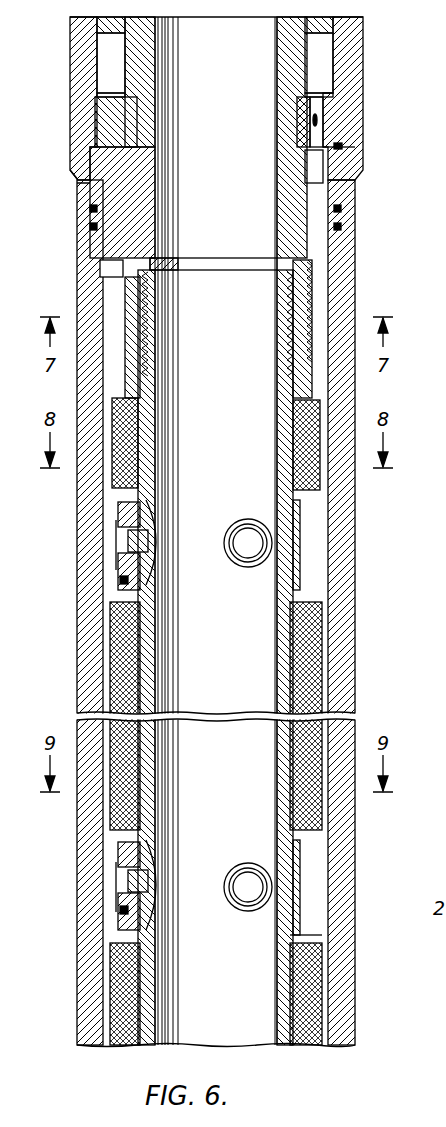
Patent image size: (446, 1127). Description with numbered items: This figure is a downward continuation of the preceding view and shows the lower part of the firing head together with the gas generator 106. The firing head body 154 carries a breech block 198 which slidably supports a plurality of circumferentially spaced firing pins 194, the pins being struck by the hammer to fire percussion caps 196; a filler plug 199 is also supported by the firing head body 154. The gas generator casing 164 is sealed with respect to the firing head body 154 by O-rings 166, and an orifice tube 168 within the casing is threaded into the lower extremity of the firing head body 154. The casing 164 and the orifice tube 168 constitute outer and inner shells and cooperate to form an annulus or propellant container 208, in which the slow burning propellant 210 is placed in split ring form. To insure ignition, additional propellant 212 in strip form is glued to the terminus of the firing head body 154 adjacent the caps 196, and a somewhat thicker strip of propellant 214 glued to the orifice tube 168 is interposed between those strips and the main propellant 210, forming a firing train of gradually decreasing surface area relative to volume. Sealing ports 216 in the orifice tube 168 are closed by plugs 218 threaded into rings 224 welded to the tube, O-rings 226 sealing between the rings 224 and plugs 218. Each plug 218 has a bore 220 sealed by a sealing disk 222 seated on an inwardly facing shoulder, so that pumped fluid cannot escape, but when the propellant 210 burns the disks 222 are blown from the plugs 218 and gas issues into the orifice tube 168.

The gas generator 106 is at (355, 618).
The firing head body 154 is at (88, 192).
The gas generator casing 164 is at (348, 533).
The O-rings 166 is at (341, 227).
The orifice tube 168 is at (320, 940).
The firing pins 194 is at (318, 105).
The percussion caps 196 is at (338, 163).
The breech block 198 is at (322, 125).
The filler plug 199 is at (100, 122).
The propellant container 208 is at (318, 570).
The propellant 210 is at (318, 672).
The additional propellant 212 is at (312, 283).
The additional propellant 214 is at (320, 478).
The sealing ports 216 is at (150, 540).
The plugs 218 is at (118, 565).
The bores 220 is at (120, 542).
The sealing disks 222 is at (250, 545).
The rings 224 is at (142, 514).
The O-rings 226 is at (120, 580).